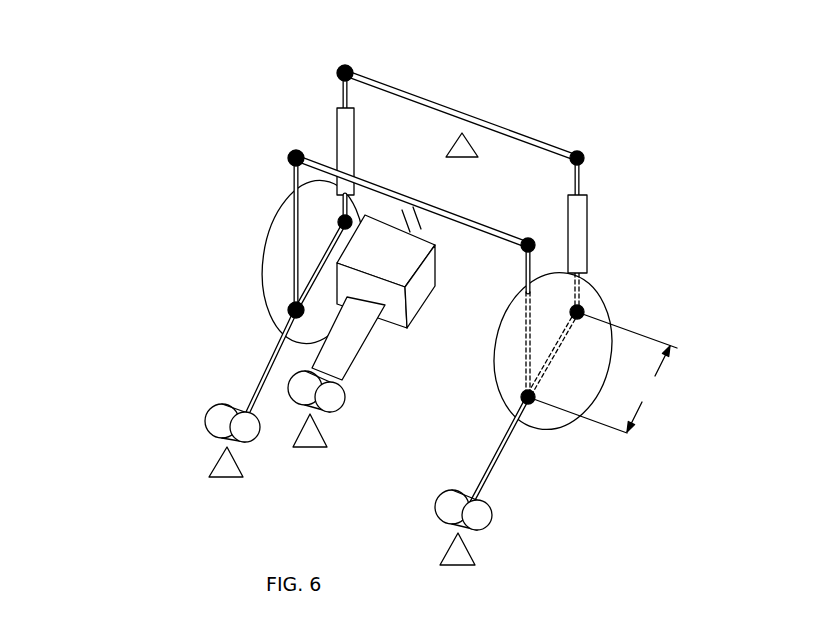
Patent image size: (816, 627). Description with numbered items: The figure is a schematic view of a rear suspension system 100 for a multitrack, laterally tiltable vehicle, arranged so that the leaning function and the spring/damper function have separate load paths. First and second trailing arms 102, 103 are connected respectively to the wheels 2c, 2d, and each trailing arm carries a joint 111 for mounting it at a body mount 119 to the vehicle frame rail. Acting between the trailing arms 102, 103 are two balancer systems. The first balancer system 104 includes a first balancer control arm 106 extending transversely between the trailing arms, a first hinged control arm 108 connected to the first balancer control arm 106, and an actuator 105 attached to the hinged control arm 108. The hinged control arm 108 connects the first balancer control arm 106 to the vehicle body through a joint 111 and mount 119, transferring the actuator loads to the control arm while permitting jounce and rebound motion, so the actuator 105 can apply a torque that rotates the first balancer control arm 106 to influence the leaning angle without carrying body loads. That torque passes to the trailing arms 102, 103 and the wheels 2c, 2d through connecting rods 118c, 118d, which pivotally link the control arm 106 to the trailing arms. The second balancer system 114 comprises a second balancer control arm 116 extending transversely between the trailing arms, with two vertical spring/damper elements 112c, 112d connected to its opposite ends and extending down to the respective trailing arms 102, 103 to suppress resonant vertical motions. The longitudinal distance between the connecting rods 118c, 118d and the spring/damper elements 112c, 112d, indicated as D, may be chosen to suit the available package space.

The rear suspension system 100 is at (203, 119).
The second balancer system 114 is at (454, 84).
The second balancer control arm 116 is at (516, 130).
The spring/damper element 112c is at (338, 127).
The spring/damper element 112d is at (588, 213).
The connecting rod 118c is at (294, 190).
The connecting rod 118d is at (524, 272).
The wheel 2c is at (268, 257).
The wheel 2d is at (606, 306).
The first balancer control arm 106 is at (460, 214).
The first trailing arm 102 is at (262, 367).
The second trailing arm 103 is at (500, 452).
The first balancer system 104 is at (410, 362).
The actuator 105 is at (410, 304).
The first hinged control arm 108 is at (347, 365).
The joint 111 is at (210, 413).
The body mount 119 is at (222, 478).